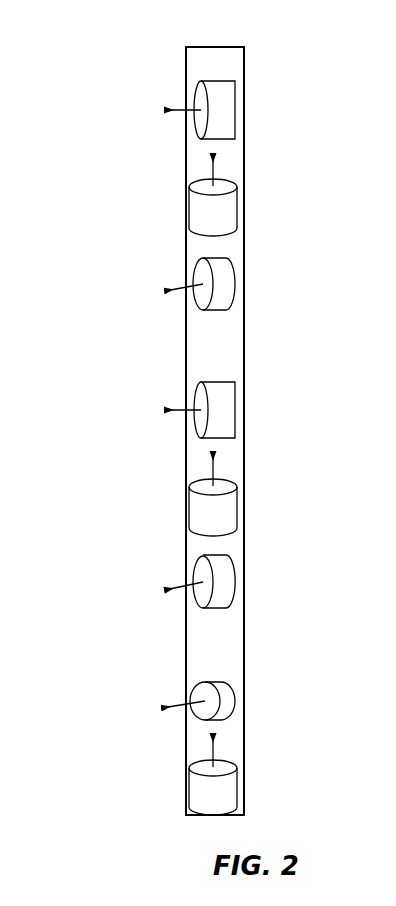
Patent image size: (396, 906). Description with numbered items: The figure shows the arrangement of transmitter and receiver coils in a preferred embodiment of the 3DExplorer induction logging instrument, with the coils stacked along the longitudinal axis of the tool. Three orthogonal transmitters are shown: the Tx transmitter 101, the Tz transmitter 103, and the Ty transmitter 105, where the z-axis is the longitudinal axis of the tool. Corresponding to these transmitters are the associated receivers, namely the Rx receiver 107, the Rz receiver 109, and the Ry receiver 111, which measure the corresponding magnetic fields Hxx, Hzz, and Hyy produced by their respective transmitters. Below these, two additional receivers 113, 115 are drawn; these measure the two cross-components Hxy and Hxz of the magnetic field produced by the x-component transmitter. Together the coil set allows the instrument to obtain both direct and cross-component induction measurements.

The Tx transmitter 101 is at (297, 73).
The Tz transmitter 103 is at (297, 175).
The Ty transmitter 105 is at (297, 245).
The Rx receiver 107 is at (297, 377).
The Rz receiver 109 is at (297, 470).
The Ry receiver 111 is at (297, 548).
The cross-component receiver 113 is at (307, 668).
The cross-component receiver 115 is at (307, 752).